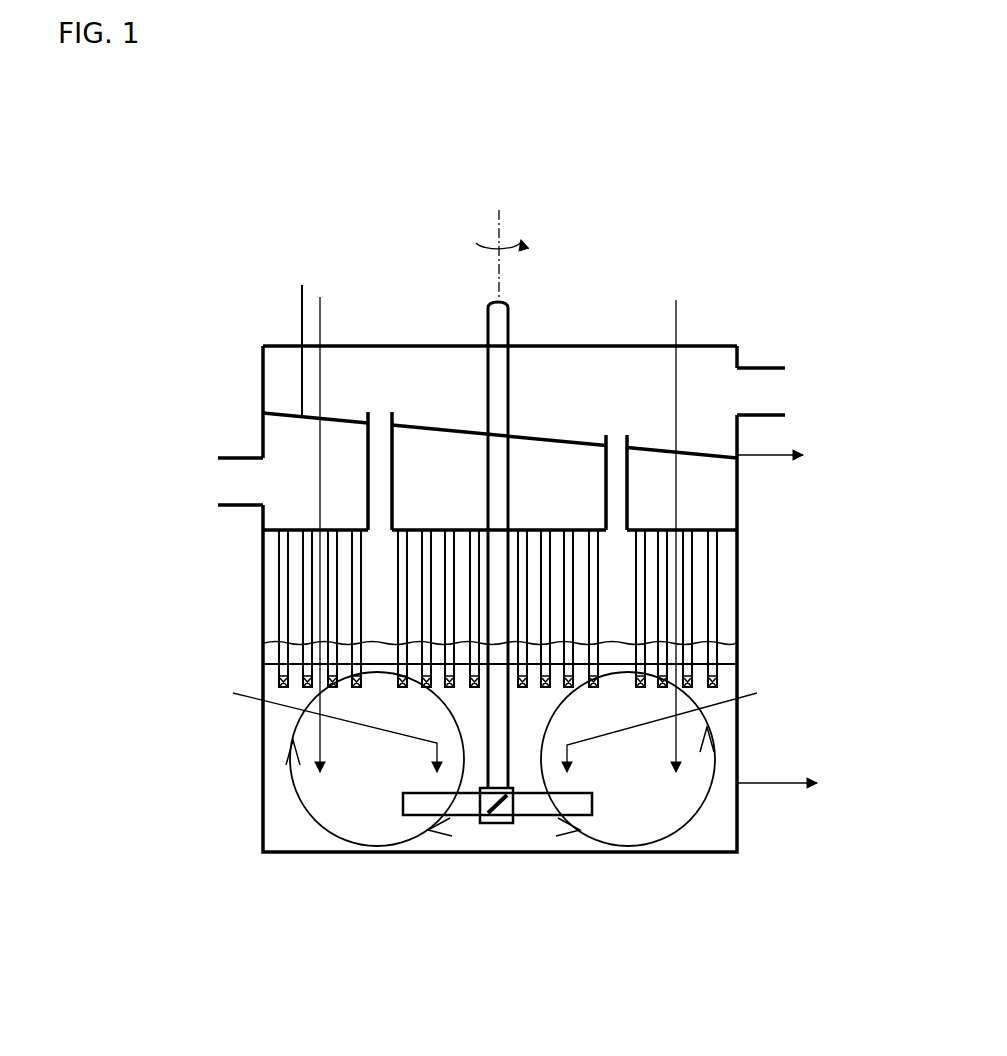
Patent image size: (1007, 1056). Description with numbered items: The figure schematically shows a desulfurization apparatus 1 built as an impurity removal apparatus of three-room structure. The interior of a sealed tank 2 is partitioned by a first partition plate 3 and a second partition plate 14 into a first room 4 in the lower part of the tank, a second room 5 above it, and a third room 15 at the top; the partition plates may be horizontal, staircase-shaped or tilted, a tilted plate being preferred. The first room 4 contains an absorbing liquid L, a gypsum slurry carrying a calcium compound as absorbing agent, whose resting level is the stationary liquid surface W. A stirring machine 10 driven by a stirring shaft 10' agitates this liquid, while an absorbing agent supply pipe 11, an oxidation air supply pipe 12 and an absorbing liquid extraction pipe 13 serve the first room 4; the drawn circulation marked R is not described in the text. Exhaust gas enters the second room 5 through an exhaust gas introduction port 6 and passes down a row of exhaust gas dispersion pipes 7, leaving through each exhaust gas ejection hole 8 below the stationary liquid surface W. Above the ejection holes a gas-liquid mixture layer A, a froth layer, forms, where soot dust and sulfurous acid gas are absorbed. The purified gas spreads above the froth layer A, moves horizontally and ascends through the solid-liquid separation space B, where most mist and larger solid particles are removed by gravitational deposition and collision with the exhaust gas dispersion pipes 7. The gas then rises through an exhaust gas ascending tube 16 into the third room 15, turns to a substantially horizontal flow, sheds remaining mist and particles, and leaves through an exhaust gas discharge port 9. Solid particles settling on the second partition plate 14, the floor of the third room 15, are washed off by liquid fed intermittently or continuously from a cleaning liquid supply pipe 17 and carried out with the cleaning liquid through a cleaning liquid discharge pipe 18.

The desulfurization apparatus 1 is at (390, 328).
The sealed tank 2 is at (282, 345).
The first partition plate 3 is at (278, 538).
The first room 4 is at (277, 737).
The second room 5 is at (293, 513).
The exhaust gas introduction port 6 is at (265, 488).
The exhaust gas dispersion pipe 7 is at (282, 590).
The exhaust gas ejection hole 8 is at (278, 675).
The exhaust gas discharge port 9 is at (727, 393).
The stirring machine 10 is at (497, 847).
The stirring shaft 10' is at (475, 499).
The absorbing agent supply pipe 11 is at (233, 693).
The oxidation air supply pipe 12 is at (322, 315).
The absorbing liquid extraction pipe 13 is at (795, 782).
The second partition plate 14 is at (288, 413).
The third room 15 is at (288, 377).
The exhaust gas ascending tube 16 is at (365, 485).
The cleaning liquid supply pipe 17 is at (298, 302).
The cleaning liquid discharge pipe 18 is at (773, 452).
The gas-liquid mixture layer A is at (752, 645).
The solid-liquid separation space B is at (700, 578).
The stationary liquid surface W is at (622, 673).
The absorbing liquid L is at (618, 766).
The circulating flow R is at (298, 797).